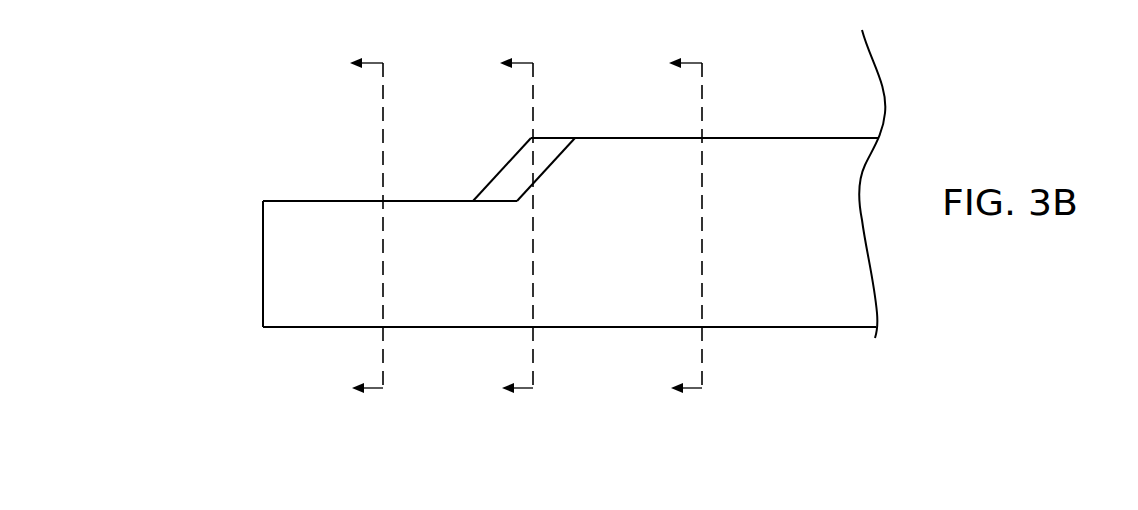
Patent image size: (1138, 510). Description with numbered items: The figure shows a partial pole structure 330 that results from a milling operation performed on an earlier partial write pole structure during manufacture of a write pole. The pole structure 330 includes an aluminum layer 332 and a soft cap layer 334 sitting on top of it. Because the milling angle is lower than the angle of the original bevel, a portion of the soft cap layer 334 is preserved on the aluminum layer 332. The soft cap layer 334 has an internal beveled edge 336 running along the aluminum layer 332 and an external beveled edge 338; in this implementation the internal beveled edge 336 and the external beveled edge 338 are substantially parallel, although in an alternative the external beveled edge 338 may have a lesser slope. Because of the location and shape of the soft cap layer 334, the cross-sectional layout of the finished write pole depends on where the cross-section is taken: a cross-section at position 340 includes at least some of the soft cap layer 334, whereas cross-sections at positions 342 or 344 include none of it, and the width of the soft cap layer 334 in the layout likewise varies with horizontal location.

The partial pole structure 330 is at (97, 270).
The aluminum layer 332 is at (263, 245).
The soft cap layer 334 is at (512, 160).
The internal beveled edge 336 is at (535, 178).
The external beveled edge 338 is at (528, 142).
The cross-section position 340 is at (521, 367).
The cross-section position 342 is at (371, 367).
The cross-section position 344 is at (691, 367).